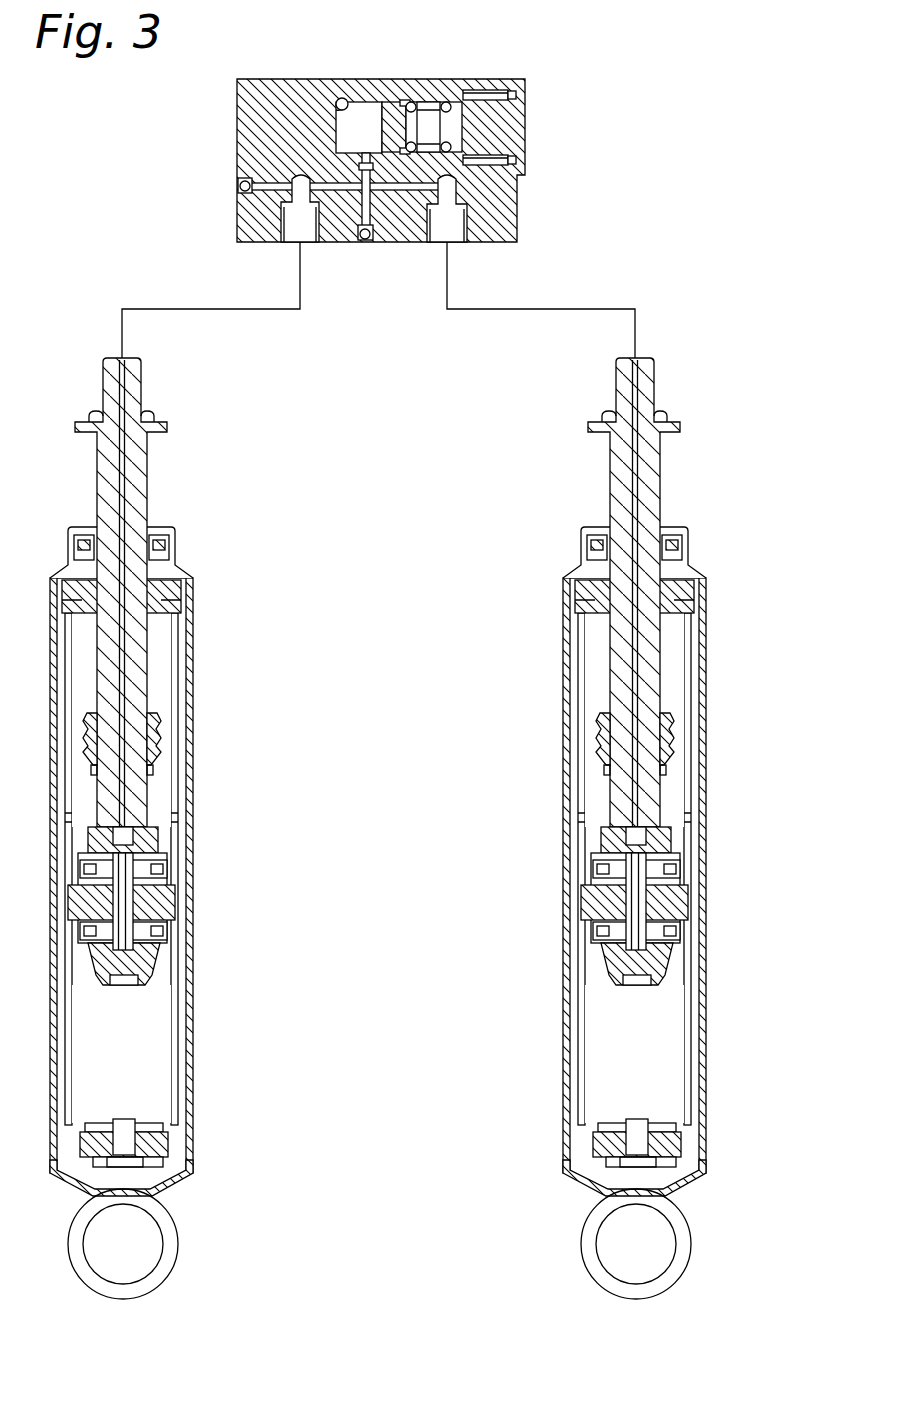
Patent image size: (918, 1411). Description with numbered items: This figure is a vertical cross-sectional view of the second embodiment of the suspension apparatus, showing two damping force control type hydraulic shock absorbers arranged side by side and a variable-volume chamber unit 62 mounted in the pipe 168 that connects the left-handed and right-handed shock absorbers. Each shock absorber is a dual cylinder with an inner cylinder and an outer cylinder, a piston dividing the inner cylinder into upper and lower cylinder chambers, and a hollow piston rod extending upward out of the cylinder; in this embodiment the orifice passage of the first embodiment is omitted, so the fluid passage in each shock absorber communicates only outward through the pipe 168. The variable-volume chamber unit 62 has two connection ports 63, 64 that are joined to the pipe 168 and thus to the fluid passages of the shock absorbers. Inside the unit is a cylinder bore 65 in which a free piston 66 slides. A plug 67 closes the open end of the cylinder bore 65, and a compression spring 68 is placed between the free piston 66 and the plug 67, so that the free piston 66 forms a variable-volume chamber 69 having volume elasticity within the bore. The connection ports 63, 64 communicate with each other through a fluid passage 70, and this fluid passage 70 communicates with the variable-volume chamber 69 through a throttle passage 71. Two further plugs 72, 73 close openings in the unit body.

The variable-volume chamber unit 62 is at (368, 71).
The connection port 63 is at (448, 244).
The connection port 64 is at (298, 244).
The cylinder bore 65 is at (398, 105).
The free piston 66 is at (425, 103).
The plug 67 is at (519, 127).
The compression spring 68 is at (414, 100).
The variable-volume chamber 69 is at (350, 118).
The fluid passage 70 is at (395, 192).
The throttle passage 71 is at (355, 165).
The plug 72 is at (362, 240).
The plug 73 is at (240, 185).
The pipe 168 is at (157, 310).